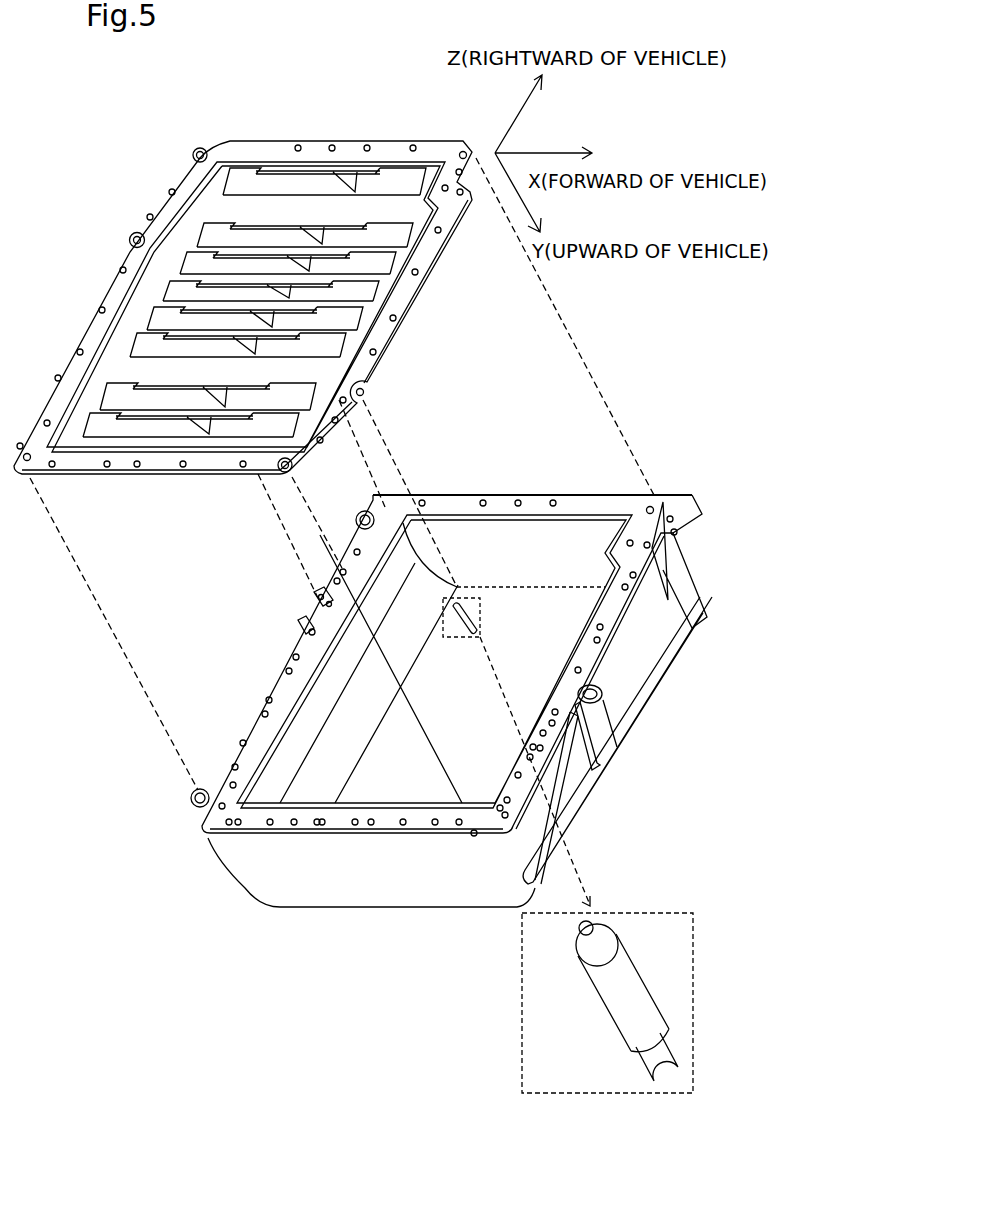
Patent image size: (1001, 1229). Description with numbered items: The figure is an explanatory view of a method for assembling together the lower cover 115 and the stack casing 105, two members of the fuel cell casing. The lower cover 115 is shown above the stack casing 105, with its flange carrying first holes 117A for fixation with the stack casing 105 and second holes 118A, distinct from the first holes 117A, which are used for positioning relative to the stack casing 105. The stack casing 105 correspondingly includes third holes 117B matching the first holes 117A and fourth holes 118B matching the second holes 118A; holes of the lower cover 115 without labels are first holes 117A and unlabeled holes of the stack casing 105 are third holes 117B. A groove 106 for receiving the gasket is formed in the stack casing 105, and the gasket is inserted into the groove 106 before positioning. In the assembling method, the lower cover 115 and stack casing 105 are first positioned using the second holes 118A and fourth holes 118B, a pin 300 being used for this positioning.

The lower cover 115 is at (310, 140).
The stack casing 105 is at (633, 697).
The groove 106 is at (538, 512).
The first holes 117A is at (196, 152).
The third holes 117B is at (385, 508).
The second holes 118A is at (130, 236).
The fourth holes 118B is at (315, 593).
The pin 300 is at (475, 614).